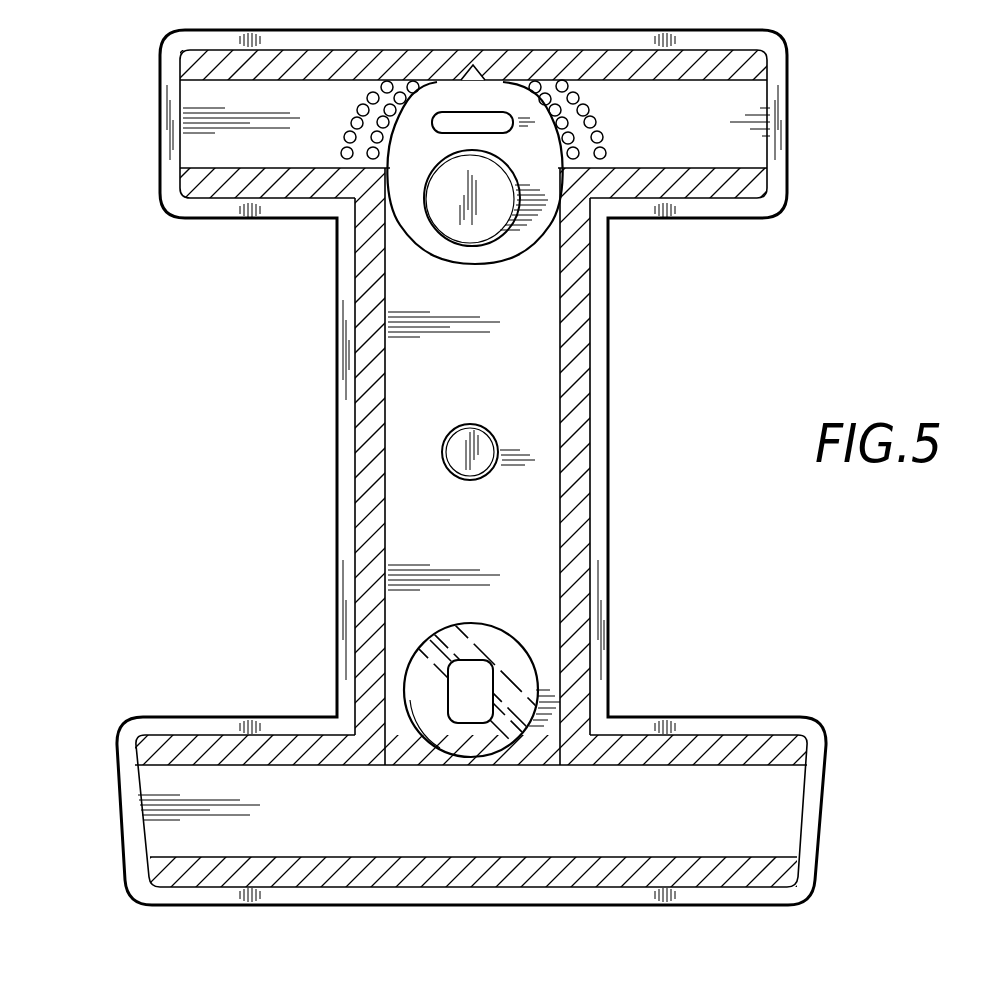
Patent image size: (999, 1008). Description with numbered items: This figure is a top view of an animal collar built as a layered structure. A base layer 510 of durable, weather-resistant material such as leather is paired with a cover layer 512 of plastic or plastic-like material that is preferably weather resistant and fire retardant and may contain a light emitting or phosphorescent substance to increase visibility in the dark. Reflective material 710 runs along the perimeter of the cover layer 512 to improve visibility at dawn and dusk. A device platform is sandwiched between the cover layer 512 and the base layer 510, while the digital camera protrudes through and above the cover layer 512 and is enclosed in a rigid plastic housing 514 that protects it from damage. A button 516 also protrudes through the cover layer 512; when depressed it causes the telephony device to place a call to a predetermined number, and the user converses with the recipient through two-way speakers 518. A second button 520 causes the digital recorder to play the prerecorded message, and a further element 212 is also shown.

The base layer 510 is at (602, 533).
The reflective material 710 is at (580, 635).
The cover layer 512 is at (417, 472).
The two-way speakers 518 is at (347, 137).
The button 516 is at (462, 232).
The button 520 is at (484, 452).
The housing 514 is at (433, 633).
The slot 212 is at (453, 688).